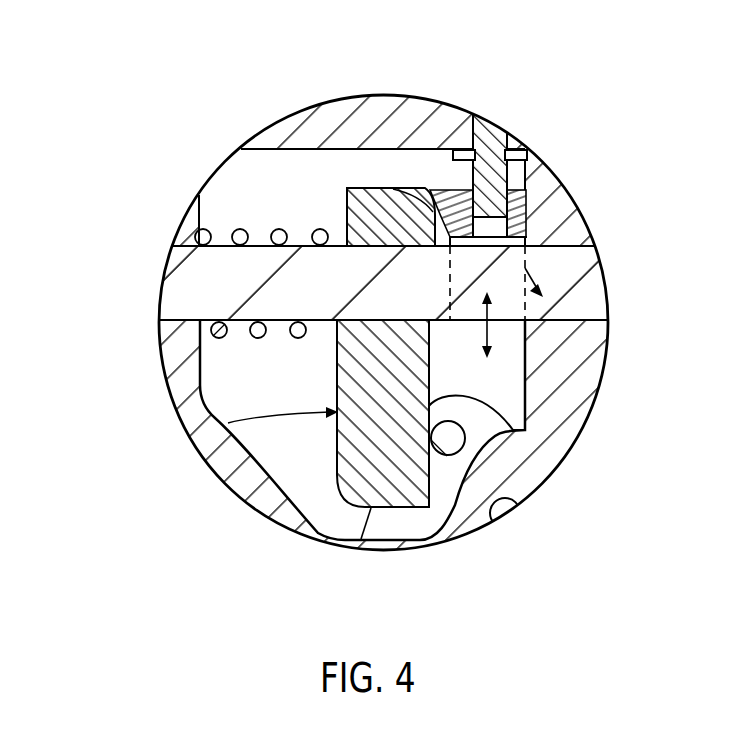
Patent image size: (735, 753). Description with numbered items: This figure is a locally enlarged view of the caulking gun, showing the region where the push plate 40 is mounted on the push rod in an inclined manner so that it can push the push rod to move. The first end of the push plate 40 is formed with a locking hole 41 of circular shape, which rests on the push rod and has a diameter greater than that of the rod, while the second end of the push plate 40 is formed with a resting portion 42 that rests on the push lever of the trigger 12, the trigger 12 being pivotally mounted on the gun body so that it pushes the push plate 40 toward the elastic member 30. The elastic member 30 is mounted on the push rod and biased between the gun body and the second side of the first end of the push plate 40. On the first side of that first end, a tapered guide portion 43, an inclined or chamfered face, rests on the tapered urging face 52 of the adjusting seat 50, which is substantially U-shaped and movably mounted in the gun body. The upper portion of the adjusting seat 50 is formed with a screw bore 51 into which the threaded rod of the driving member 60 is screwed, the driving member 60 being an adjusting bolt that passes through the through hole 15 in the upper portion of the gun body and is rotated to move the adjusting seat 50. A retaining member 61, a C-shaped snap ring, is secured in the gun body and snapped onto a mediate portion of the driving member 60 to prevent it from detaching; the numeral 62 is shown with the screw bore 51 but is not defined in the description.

The trigger 12 is at (440, 507).
The through hole 15 is at (463, 118).
The elastic member 30 is at (226, 214).
The push plate 40 is at (195, 440).
The locking hole 41 is at (345, 193).
The resting portion 42 is at (355, 482).
The guide portion 43 is at (385, 188).
The adjusting seat 50 is at (565, 315).
The screw bore 51 is at (527, 192).
The urging face 52 is at (451, 213).
The driving member 60 is at (506, 113).
The retaining member 61 is at (528, 151).
The engaging portion 62 is at (496, 302).